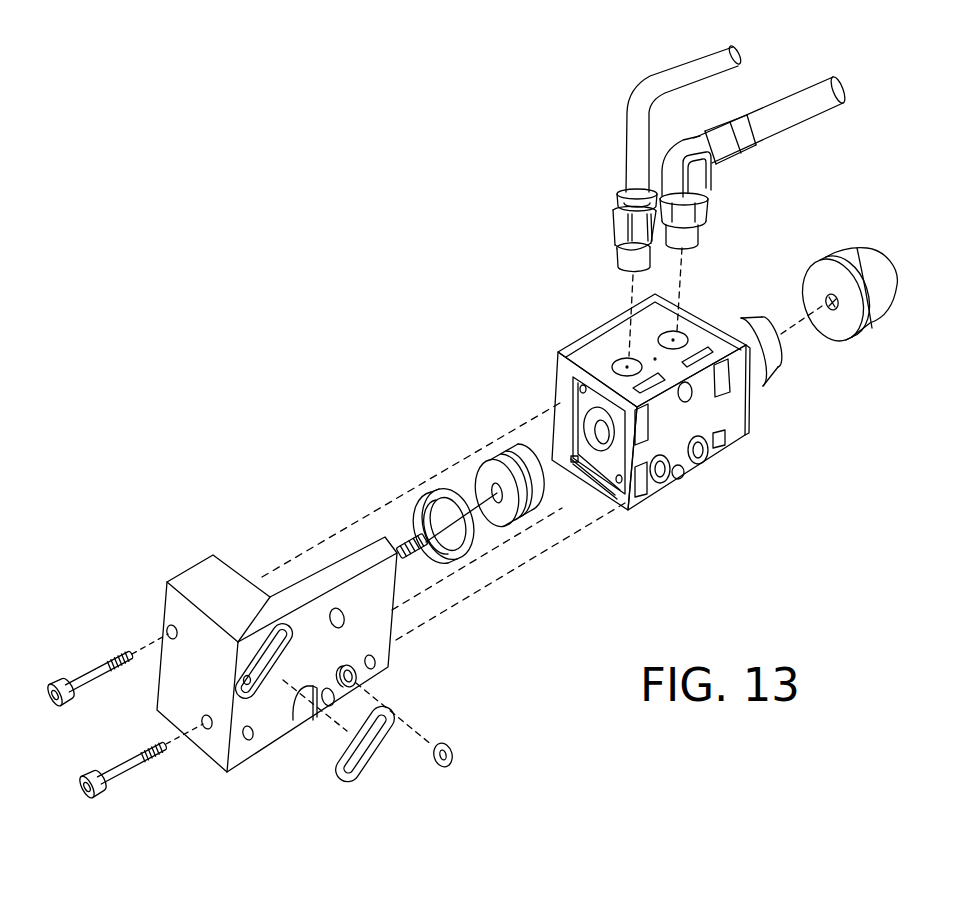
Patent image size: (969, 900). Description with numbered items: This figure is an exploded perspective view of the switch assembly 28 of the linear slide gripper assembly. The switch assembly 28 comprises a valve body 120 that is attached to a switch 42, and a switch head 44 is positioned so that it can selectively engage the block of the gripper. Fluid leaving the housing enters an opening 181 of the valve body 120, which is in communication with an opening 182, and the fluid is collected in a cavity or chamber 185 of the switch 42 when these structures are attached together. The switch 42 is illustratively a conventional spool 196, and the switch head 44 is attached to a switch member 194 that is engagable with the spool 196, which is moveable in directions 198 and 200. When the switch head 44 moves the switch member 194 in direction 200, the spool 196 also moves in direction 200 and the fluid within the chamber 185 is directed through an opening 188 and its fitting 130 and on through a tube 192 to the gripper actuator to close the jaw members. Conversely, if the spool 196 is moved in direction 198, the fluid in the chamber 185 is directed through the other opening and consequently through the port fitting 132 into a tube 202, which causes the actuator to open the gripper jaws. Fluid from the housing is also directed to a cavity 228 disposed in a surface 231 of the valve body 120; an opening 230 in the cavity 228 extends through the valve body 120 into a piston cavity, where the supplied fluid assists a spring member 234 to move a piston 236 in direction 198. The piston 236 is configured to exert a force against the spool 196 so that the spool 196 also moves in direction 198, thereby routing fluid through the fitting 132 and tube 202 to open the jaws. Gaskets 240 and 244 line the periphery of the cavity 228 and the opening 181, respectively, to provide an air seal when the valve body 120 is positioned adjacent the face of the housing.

The switch assembly 28 is at (288, 242).
The switch 42 is at (570, 312).
The switch head 44 is at (871, 250).
The valve body 120 is at (229, 536).
The port fitting 130 is at (712, 183).
The port fitting 132 is at (620, 228).
The opening 181 is at (362, 678).
The opening 182 is at (713, 450).
The chamber 185 is at (657, 359).
The opening 188 is at (675, 336).
The tube 192 is at (797, 90).
The switch member 194 is at (745, 288).
The spool 196 is at (606, 447).
The direction 198 is at (692, 495).
The direction 200 is at (692, 495).
The tube 202 is at (652, 73).
The cavity 228 is at (280, 640).
The opening 230 is at (244, 680).
The surface 231 is at (272, 737).
The spring member 234 is at (406, 535).
The piston 236 is at (533, 518).
The gasket 240 is at (364, 764).
The gasket 244 is at (455, 752).